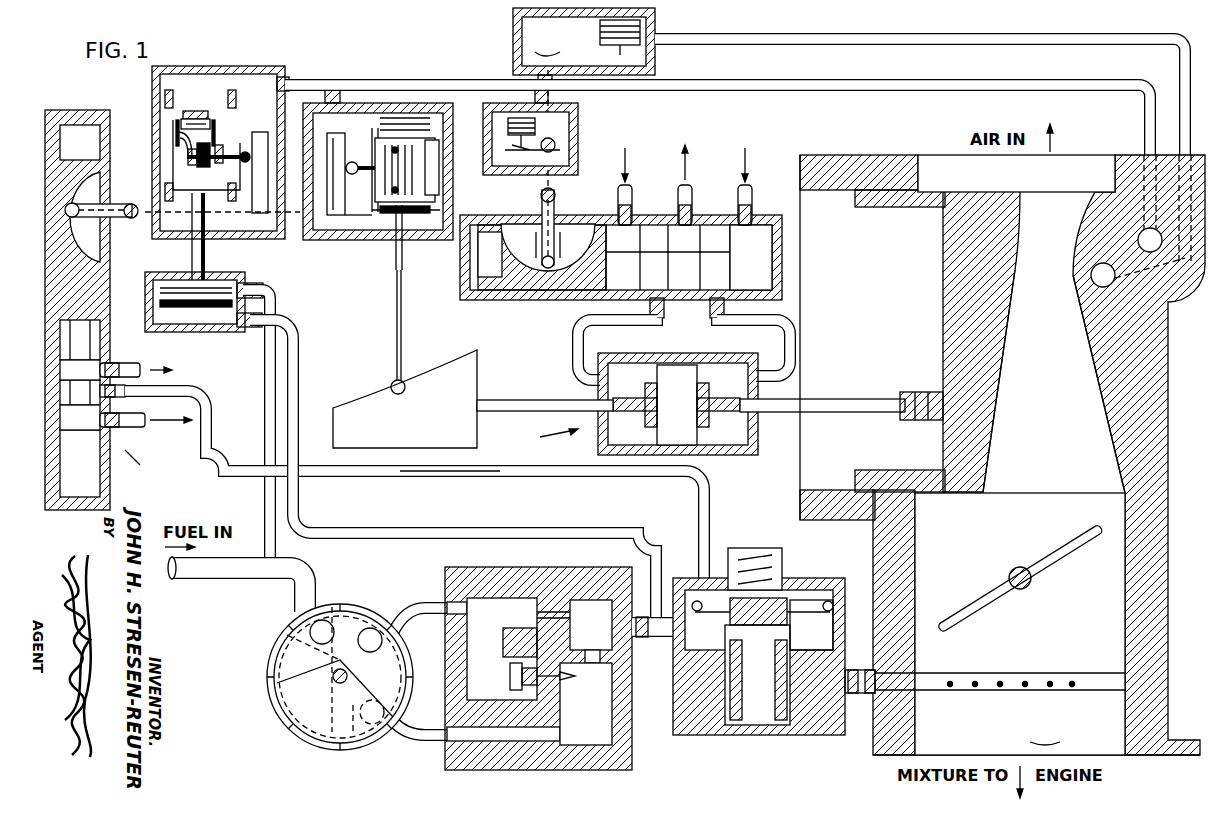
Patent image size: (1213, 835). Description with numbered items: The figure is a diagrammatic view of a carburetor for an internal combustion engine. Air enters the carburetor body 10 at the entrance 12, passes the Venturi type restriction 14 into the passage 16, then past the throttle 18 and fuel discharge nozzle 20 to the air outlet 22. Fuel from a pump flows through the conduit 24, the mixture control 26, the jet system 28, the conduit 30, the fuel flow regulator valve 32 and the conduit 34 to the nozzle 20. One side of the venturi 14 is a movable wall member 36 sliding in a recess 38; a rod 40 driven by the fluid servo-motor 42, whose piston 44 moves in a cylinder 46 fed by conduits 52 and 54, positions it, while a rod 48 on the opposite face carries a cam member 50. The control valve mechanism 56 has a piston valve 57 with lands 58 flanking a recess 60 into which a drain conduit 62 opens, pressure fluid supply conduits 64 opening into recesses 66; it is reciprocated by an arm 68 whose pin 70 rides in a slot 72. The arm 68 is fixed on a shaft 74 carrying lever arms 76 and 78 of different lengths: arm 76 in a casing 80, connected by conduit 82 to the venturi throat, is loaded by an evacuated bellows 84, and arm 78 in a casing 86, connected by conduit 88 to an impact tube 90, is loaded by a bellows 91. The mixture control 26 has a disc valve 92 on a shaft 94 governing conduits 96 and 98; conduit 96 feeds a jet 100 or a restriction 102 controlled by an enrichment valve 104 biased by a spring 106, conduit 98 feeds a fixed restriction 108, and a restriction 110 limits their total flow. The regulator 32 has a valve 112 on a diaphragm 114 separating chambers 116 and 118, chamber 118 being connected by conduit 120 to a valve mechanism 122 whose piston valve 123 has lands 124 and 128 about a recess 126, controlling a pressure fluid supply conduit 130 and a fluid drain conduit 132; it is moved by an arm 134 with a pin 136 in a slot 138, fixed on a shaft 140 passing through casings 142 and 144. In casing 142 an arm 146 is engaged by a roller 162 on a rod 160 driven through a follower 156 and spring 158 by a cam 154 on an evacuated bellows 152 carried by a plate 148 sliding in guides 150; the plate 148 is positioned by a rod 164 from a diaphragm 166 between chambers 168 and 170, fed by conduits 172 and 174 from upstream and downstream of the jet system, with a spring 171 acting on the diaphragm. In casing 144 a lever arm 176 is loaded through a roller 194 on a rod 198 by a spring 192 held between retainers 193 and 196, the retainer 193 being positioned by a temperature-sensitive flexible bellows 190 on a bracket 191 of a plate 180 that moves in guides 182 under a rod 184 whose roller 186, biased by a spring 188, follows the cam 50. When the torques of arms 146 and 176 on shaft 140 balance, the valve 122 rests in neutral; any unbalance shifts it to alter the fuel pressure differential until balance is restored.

The carburetor body 10 is at (1140, 345).
The entrance 12 is at (1045, 188).
The Venturi type restriction 14 is at (1075, 305).
The passage 16 is at (1030, 520).
The throttle 18 is at (1068, 545).
The fuel discharge nozzle 20 is at (1042, 673).
The air outlet 22 is at (1045, 733).
The conduit 24 is at (210, 580).
The mixture control 26 is at (292, 725).
The jet system 28 is at (503, 770).
The conduit 30 is at (650, 637).
The fuel flow regulator valve 32 is at (690, 735).
The conduit 34 is at (850, 670).
The movable wall member 36 is at (942, 290).
The recess 38 is at (825, 280).
The rod 40 is at (840, 398).
The fluid servo-motor 42 is at (547, 435).
The piston 44 is at (676, 398).
The cylinder 46 is at (620, 364).
The rod 48 is at (498, 400).
The cam member 50 is at (418, 425).
The conduit 52 is at (570, 340).
The conduit 54 is at (792, 335).
The control valve mechanism 56 is at (476, 302).
The piston valve 57 is at (590, 292).
The lands 58 is at (655, 262).
The recess 60 is at (690, 242).
The drain conduit 62 is at (692, 188).
The pressure fluid supply conduits 64 is at (618, 200).
The recesses 66 is at (650, 303).
The arm 68 is at (556, 230).
The pin 70 is at (534, 292).
The slot 72 is at (540, 240).
The shaft 74 is at (540, 42).
The lever arm 76 is at (555, 87).
The lever arm 78 is at (518, 178).
The casing 80 is at (513, 20).
The conduit 82 is at (800, 34).
The bellows 84 is at (641, 30).
The casing 86 is at (506, 124).
The conduit 88 is at (375, 79).
The impact tube 90 is at (1100, 196).
The bellows 91 is at (504, 150).
The disc valve 92 is at (362, 660).
The shaft 94 is at (333, 676).
The conduit 96 is at (418, 602).
The conduit 98 is at (430, 728).
The fixed restriction or jet 100 is at (537, 615).
The restriction 102 is at (525, 690).
The enrichment valve 104 is at (575, 676).
The spring 106 is at (512, 670).
The fixed restriction 108 is at (565, 725).
The restriction 110 is at (594, 640).
The valve 112 is at (768, 722).
The diaphragm 114 is at (785, 588).
The expansible chamber 116 is at (815, 640).
The expansible chamber 118 is at (820, 600).
The conduit 120 is at (600, 480).
The valve mechanism 122 is at (120, 445).
The piston valve 123 is at (85, 340).
The land 124 is at (85, 425).
The recess 126 is at (130, 390).
The land 128 is at (85, 378).
The pressure fluid supply conduit 130 is at (140, 370).
The fluid drain conduit 132 is at (140, 428).
The arm 134 is at (110, 242).
The pin 136 is at (100, 190).
The slot 138 is at (108, 180).
The shaft 140 is at (131, 219).
The casing 142 is at (222, 236).
The casing 144 is at (403, 258).
The arm 146 is at (265, 132).
The plate 148 is at (195, 108).
The guides 150 is at (170, 88).
The expansible bellows 152 is at (176, 118).
The cam 154 is at (178, 142).
The follower 156 is at (190, 166).
The spring 158 is at (204, 168).
The rod 160 is at (240, 153).
The roller 162 is at (245, 128).
The rod 164 is at (194, 256).
The diaphragm 166 is at (238, 327).
The expansible chamber 168 is at (226, 324).
The expansible chamber 170 is at (264, 285).
The spring 171 is at (160, 288).
The conduit 172 is at (264, 395).
The conduit 174 is at (300, 318).
The lever arm 176 is at (345, 216).
The plate 180 is at (405, 135).
The guides 182 is at (368, 140).
The rod 184 is at (397, 335).
The roller 186 is at (391, 388).
The spring 188 is at (395, 118).
The flexible bellows 190 is at (446, 115).
The bracket 191 is at (439, 180).
The spring 192 is at (385, 250).
The spring retainer 193 is at (407, 217).
The roller 194 is at (333, 88).
The retainer 196 is at (368, 218).
The rod 198 is at (346, 164).